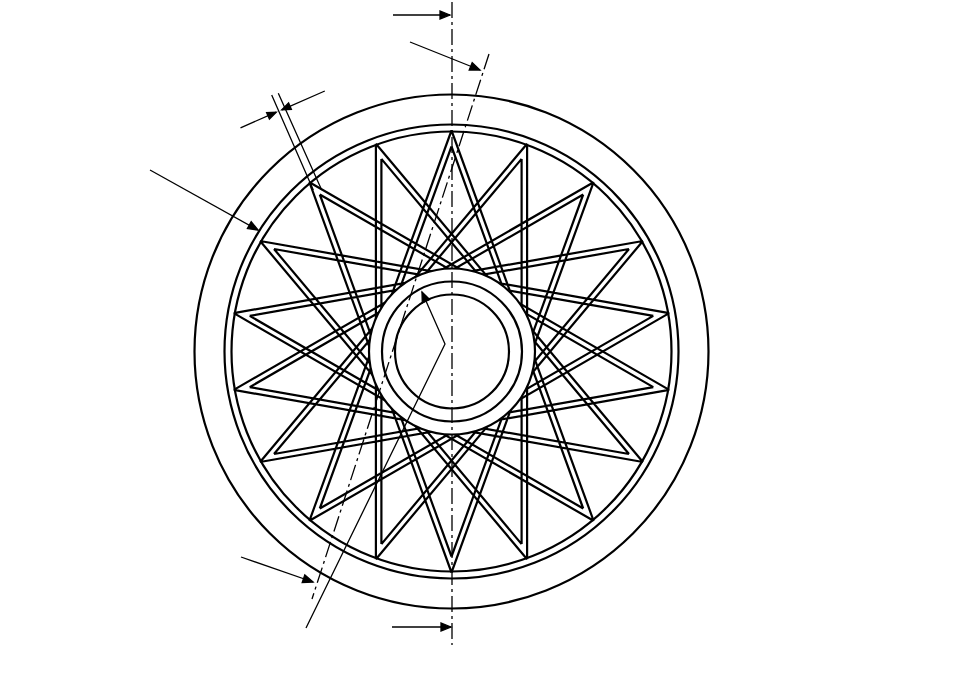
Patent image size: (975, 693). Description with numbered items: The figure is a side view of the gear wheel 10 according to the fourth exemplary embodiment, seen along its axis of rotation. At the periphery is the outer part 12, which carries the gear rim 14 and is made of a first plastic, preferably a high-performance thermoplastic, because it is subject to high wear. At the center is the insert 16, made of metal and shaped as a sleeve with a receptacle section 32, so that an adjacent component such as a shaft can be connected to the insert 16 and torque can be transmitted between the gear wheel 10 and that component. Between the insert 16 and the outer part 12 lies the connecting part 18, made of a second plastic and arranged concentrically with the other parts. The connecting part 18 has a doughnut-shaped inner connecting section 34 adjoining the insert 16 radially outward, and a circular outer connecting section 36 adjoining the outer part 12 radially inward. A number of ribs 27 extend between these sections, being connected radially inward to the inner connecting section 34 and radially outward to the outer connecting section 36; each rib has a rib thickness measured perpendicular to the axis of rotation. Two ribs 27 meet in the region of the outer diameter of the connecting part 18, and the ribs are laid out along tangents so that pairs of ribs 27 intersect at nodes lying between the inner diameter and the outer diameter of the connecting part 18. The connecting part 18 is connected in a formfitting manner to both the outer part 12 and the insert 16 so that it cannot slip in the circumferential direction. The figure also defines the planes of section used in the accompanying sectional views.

The gear wheel 10 is at (118, 110).
The outer part 12 is at (452, 341).
The gear rim 14 is at (613, 160).
The insert 16 is at (512, 341).
The connecting part 18 is at (534, 387).
The ribs 27 is at (534, 387).
The receptacle section 32 is at (495, 430).
The inner connecting section 34 is at (493, 378).
The outer connecting section 36 is at (538, 352).